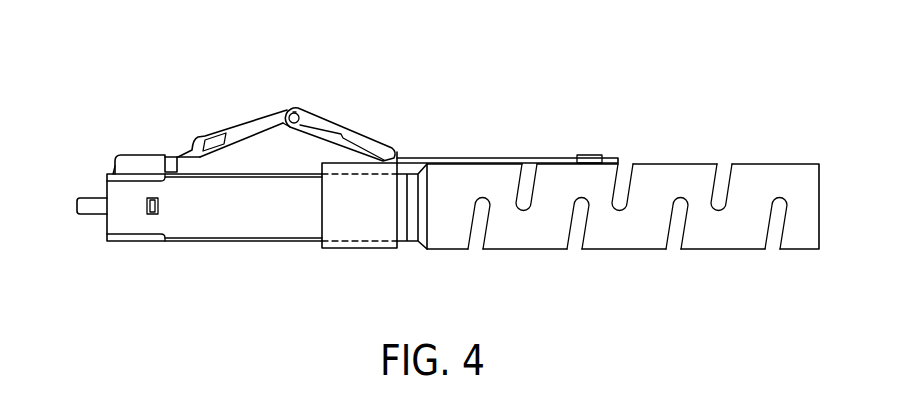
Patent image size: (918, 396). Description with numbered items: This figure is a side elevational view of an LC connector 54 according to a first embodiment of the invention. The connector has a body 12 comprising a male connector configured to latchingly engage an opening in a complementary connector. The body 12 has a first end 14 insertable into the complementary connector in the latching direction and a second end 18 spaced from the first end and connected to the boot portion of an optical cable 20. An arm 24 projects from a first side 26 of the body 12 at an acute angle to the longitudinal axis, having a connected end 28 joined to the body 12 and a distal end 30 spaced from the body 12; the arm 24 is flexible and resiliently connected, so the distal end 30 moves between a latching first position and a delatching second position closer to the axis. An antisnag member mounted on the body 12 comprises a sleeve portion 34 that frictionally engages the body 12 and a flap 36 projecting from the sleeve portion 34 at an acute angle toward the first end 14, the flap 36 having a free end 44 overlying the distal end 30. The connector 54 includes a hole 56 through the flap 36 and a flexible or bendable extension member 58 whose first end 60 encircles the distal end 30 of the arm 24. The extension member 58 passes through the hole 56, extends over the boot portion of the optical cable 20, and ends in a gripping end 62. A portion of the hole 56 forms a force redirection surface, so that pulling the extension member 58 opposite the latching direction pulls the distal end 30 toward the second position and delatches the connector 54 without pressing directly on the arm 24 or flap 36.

The body 12 is at (120, 192).
The first end 14 is at (105, 222).
The second end 18 is at (407, 245).
The optical cable 20 is at (620, 250).
The arm 24 is at (253, 126).
The first side 26 is at (115, 172).
The connected end 28 is at (143, 163).
The distal end 30 is at (291, 113).
The sleeve portion 34 is at (358, 250).
The flap 36 is at (323, 119).
The free end 44 is at (295, 112).
The LC connector 54 is at (185, 69).
The hole 56 is at (398, 143).
The extension member 58 is at (495, 157).
The first end 60 is at (285, 123).
The gripping end 62 is at (590, 154).